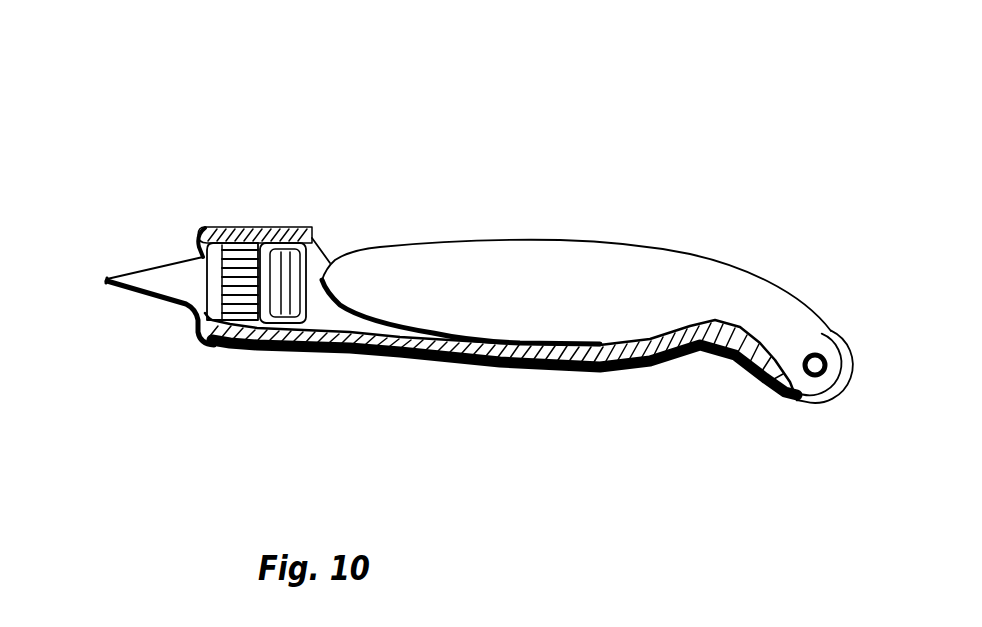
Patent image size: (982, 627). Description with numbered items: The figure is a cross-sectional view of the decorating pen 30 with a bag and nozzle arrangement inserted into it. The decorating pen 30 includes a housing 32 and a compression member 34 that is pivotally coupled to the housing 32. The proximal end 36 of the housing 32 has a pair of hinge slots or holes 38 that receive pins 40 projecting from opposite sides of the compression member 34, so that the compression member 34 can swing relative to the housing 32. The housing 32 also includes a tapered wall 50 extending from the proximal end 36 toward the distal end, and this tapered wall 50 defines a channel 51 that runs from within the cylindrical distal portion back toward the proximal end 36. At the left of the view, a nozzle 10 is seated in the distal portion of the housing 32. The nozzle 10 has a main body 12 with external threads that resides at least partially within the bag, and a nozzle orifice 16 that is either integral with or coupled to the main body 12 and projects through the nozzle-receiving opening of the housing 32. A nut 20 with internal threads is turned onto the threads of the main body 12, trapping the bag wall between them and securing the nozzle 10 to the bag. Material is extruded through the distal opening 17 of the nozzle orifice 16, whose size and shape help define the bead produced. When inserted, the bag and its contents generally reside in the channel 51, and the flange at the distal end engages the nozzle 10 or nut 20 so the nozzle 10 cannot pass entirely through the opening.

The nozzle 10 is at (149, 240).
The main body 12 is at (318, 228).
The nozzle orifice 16 is at (173, 283).
The distal opening 17 is at (108, 283).
The nut 20 is at (238, 267).
The decorating pen 30 is at (525, 210).
The housing 32 is at (478, 366).
The compression member 34 is at (616, 270).
The proximal end 36 is at (805, 402).
The hinge slots or holes 38 is at (770, 383).
The pins 40 is at (820, 360).
The tapered wall 50 is at (415, 355).
The channel 51 is at (330, 314).